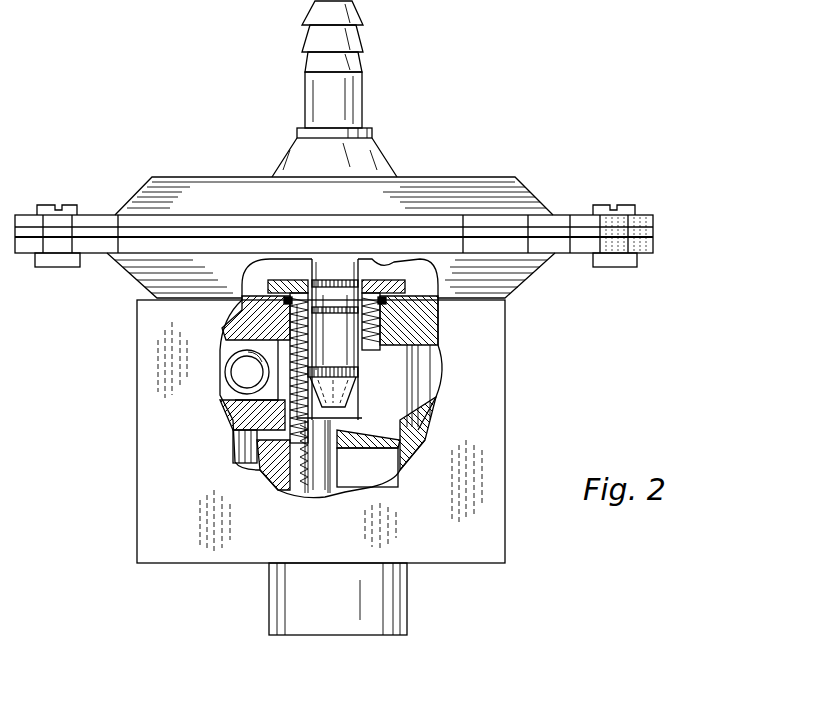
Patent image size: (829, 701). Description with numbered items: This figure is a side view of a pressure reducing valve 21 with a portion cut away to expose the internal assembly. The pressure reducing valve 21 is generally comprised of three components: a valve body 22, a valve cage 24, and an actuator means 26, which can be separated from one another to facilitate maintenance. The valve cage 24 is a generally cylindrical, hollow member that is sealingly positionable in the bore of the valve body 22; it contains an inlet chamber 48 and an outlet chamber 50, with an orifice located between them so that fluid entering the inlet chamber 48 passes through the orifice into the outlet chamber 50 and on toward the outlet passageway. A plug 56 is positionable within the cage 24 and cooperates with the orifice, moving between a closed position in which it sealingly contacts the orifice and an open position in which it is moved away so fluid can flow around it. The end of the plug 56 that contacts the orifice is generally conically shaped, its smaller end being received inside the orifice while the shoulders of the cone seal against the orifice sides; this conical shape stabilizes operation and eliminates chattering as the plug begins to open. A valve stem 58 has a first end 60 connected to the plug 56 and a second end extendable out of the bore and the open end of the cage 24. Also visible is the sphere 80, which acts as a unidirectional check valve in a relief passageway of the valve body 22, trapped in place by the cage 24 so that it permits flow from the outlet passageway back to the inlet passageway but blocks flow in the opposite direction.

The pressure reducing valve 21 is at (475, 134).
The valve body 22 is at (136, 504).
The valve cage 24 is at (306, 495).
The actuator means 26 is at (283, 151).
The inlet chamber 48 is at (380, 400).
The outlet chamber 50 is at (374, 481).
The plug 56 is at (340, 382).
The valve stem 58 is at (438, 322).
The first end of valve stem 60 is at (297, 328).
The check valve sphere 80 is at (247, 373).